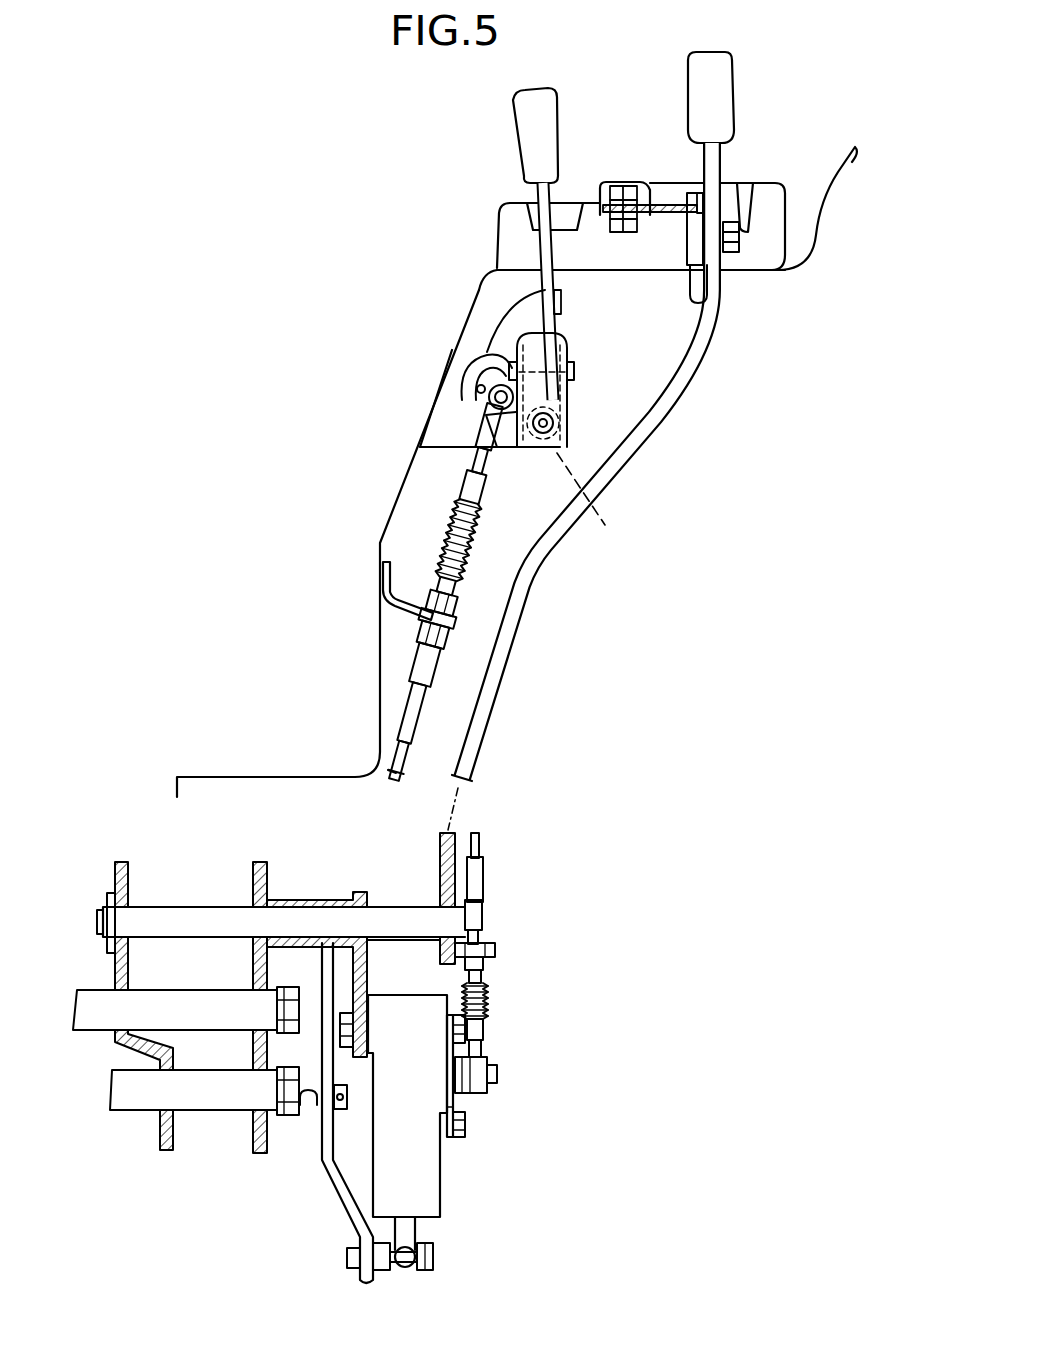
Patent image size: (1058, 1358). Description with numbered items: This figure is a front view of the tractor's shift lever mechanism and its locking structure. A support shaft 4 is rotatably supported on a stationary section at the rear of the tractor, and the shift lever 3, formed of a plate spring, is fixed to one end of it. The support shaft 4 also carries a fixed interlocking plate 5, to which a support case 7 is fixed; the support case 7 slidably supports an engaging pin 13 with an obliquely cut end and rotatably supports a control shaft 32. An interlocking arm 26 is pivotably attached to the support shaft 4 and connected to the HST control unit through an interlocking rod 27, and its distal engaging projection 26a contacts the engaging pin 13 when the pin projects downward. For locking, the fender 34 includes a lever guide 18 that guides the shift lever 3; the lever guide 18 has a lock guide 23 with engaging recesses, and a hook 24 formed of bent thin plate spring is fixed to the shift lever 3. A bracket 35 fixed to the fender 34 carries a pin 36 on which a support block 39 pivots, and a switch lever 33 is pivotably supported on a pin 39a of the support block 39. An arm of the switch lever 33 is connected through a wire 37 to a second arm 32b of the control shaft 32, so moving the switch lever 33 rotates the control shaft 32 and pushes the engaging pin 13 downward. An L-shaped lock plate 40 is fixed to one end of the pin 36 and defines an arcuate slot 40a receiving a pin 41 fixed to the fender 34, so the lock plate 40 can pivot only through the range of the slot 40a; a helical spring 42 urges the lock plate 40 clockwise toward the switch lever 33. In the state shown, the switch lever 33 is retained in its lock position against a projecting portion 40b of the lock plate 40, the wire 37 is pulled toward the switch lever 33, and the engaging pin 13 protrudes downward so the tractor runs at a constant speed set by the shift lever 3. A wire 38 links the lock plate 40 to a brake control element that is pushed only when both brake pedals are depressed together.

The shift lever 3 is at (740, 107).
The support shaft 4 is at (207, 905).
The interlocking plate 5 is at (367, 975).
The support case 7 is at (425, 1185).
The engaging pin 13 is at (420, 1235).
The lever guide 18 is at (658, 170).
The lock guide 23 is at (657, 210).
The hook 24 is at (699, 311).
The interlocking arm 26 is at (340, 1200).
The engaging projection 26a is at (435, 1263).
The interlocking rod 27 is at (311, 1103).
The control shaft 32 is at (497, 1065).
The second arm 32b is at (467, 1095).
The switch lever 33 is at (517, 137).
The fender 34 is at (815, 201).
The bracket 35 is at (520, 445).
The pin 36 is at (557, 427).
The wire 37 is at (483, 845).
The wire 38 is at (392, 757).
The support block 39 is at (560, 397).
The pin 39a is at (572, 378).
The lock plate 40 is at (487, 352).
The arcuate slot 40a is at (485, 360).
The projecting portion 40b is at (565, 300).
The pin 41 is at (478, 388).
The helical spring 42 is at (597, 503).